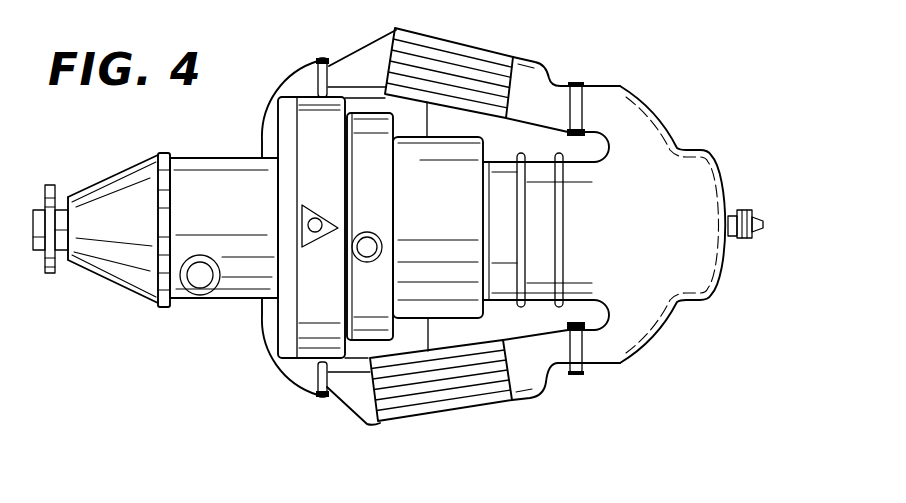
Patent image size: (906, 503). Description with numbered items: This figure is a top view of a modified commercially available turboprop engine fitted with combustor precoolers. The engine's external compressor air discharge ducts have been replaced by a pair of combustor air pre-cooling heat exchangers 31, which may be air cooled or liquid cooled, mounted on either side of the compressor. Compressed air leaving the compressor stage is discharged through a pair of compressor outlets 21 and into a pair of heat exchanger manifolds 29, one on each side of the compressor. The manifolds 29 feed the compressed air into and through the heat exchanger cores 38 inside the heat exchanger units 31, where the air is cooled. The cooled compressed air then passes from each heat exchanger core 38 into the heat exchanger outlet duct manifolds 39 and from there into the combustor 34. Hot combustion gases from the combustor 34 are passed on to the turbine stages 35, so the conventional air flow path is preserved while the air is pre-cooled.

The compressor outlet 21 is at (304, 66).
The heat exchanger manifold 29 is at (394, 30).
The combustor air pre-cooling heat exchanger 31 is at (430, 30).
The combustor 34 is at (703, 300).
The turbine stages 35 is at (545, 310).
The heat exchanger core 38 is at (490, 62).
The heat exchanger outlet duct manifold 39 is at (549, 82).